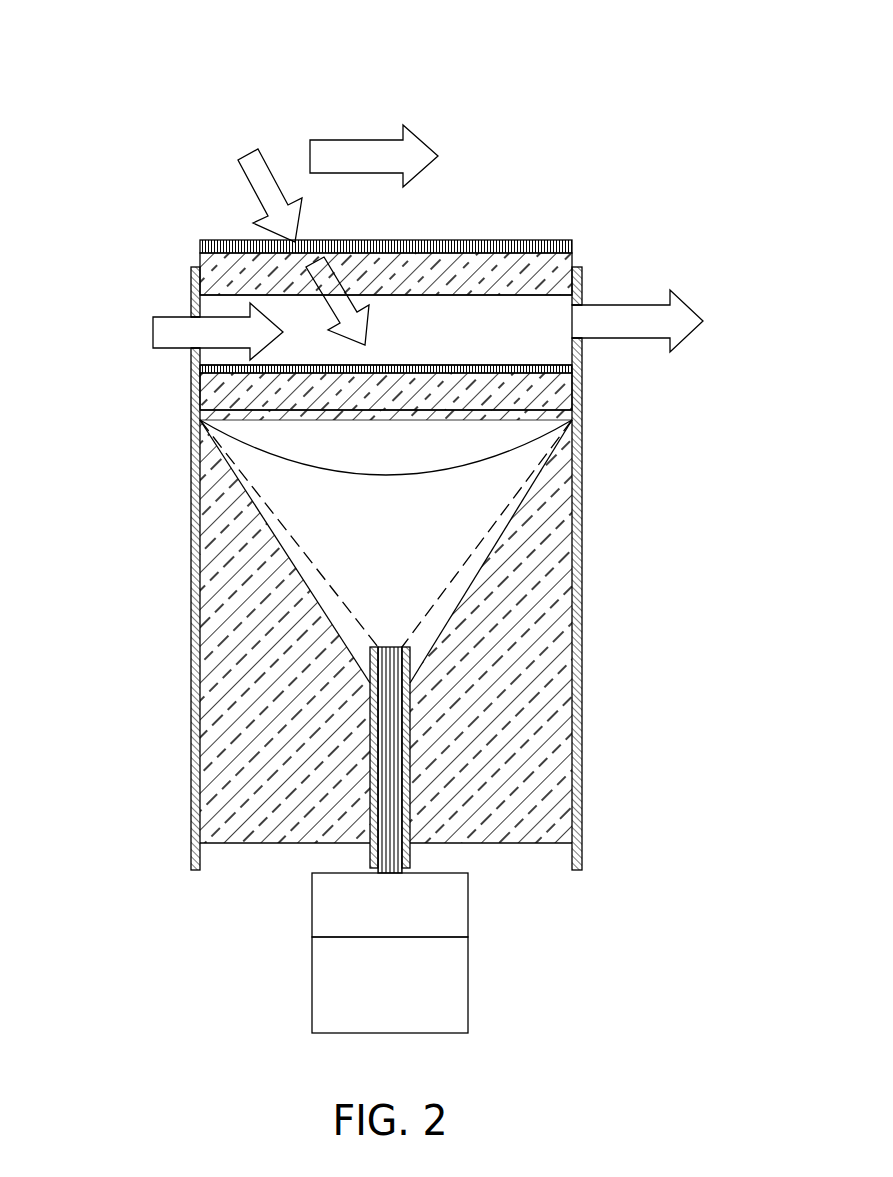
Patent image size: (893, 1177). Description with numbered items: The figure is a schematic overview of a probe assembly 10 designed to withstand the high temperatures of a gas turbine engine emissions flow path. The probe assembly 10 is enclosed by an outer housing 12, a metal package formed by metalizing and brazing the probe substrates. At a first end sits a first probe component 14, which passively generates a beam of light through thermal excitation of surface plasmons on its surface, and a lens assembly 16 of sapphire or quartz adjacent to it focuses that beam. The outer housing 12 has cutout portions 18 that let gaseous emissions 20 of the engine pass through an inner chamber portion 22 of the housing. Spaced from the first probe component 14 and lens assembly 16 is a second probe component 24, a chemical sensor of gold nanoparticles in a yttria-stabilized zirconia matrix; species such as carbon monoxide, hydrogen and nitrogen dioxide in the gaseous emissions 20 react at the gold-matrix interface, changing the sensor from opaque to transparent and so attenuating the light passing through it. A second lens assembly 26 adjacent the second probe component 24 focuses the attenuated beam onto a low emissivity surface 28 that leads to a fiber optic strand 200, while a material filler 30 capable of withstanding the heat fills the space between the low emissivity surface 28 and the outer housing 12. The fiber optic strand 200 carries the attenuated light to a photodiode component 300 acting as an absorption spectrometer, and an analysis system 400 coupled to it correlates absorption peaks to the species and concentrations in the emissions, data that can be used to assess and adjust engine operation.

The probe assembly 10 is at (466, 79).
The outer housing 12 is at (191, 797).
The first probe component 14 is at (200, 242).
The lens assembly 16 is at (525, 255).
The cutout portions 18 is at (191, 350).
The gaseous emissions 20 is at (153, 332).
The inner chamber portion 22 is at (540, 342).
The second probe component 24 is at (235, 373).
The second lens assembly 26 is at (553, 400).
The low emissivity surface 28 is at (322, 606).
The material filler 30 is at (540, 697).
The fiber optic strand 200 is at (388, 723).
The photodiode component 300 is at (372, 913).
The analysis system 400 is at (372, 988).